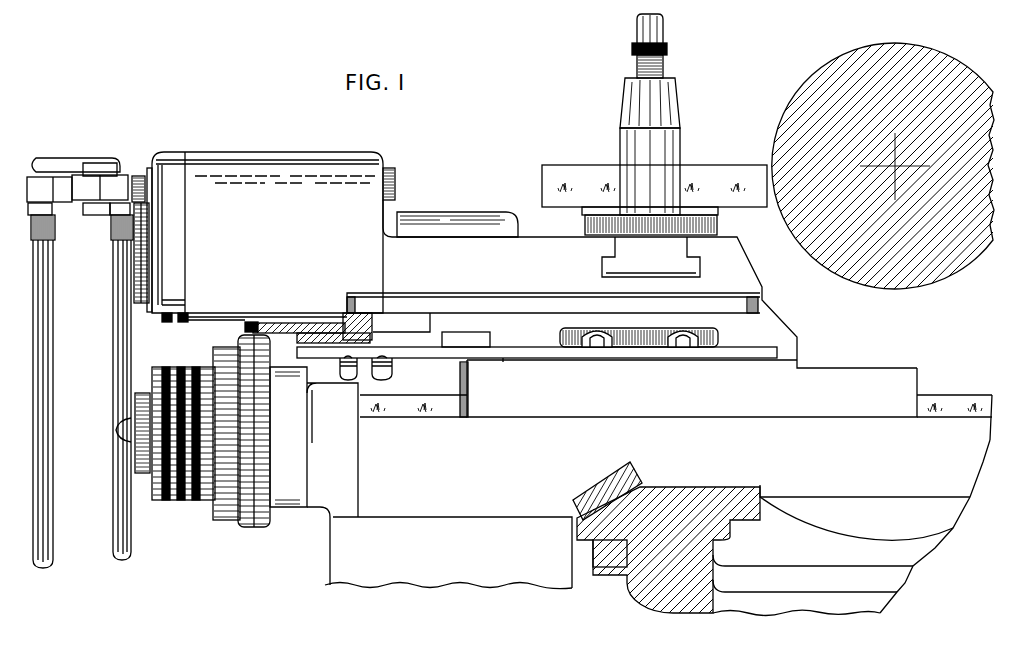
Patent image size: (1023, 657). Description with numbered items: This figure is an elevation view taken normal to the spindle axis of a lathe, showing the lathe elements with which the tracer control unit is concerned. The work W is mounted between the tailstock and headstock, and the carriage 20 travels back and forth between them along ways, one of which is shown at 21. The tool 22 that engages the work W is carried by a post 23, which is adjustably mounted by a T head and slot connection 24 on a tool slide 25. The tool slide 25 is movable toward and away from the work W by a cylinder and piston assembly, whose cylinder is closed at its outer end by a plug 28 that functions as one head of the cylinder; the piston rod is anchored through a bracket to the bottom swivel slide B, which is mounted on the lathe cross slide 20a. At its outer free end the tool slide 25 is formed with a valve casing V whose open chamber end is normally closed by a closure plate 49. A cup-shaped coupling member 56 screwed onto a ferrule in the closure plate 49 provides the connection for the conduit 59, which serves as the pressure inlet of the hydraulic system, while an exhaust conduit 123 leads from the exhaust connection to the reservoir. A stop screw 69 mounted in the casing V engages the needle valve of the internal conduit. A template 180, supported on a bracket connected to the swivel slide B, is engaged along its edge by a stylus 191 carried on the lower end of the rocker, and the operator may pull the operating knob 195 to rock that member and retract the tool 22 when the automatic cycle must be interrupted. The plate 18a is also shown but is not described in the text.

The valve casing V is at (250, 160).
The closure plate 49 is at (168, 158).
The cup-shaped coupling member 56 is at (138, 175).
The plug 28 is at (140, 271).
The stop screw 69 is at (396, 186).
The conduit 59 is at (46, 358).
The exhaust conduit 123 is at (118, 352).
The operating knob 195 is at (167, 320).
The stylus 191 is at (245, 328).
The template 180 is at (282, 326).
The mounting plate 18a is at (414, 348).
The tool slide 25 is at (572, 298).
The T head and slot connection 24 is at (608, 268).
The post 23 is at (632, 96).
The tool 22 is at (718, 175).
The work W is at (913, 50).
The bottom swivel slide B is at (785, 343).
The lathe cross slide 20a is at (849, 378).
The carriage 20 is at (968, 405).
The way 21 is at (605, 478).